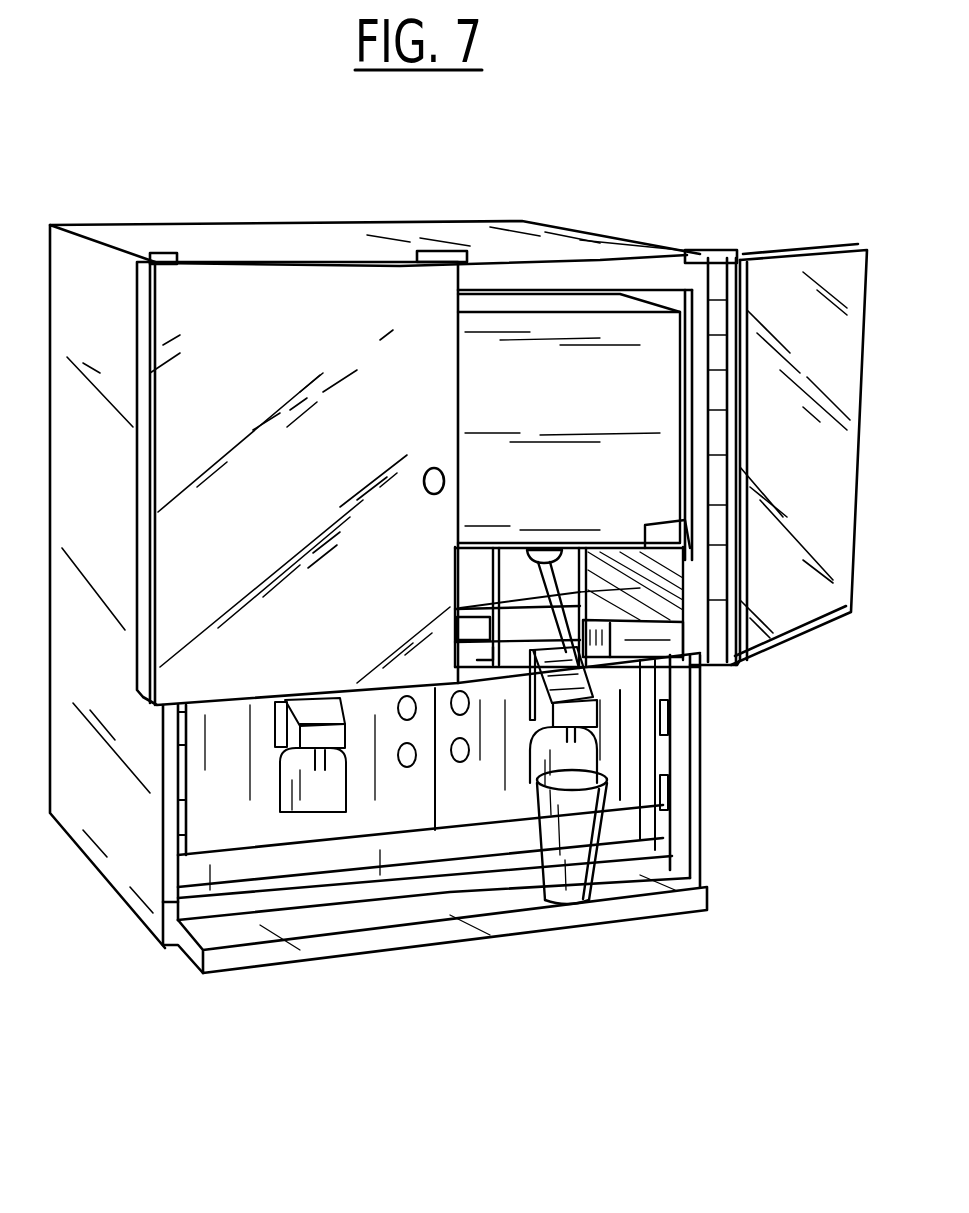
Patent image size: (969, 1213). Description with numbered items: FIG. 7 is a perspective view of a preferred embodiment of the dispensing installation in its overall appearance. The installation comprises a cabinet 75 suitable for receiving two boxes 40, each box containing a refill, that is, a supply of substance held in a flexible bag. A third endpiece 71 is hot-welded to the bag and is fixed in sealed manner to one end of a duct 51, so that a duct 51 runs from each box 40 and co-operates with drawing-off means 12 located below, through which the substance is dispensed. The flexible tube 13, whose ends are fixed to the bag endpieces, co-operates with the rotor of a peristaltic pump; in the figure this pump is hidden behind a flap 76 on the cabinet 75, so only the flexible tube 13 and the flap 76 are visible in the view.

The cabinet 75 is at (670, 212).
The box 40 is at (570, 398).
The third endpiece 71 is at (545, 550).
The flexible tube 13 is at (580, 592).
The duct 51 is at (458, 607).
The drawing-off means 12 is at (605, 700).
The flap 76 is at (460, 797).